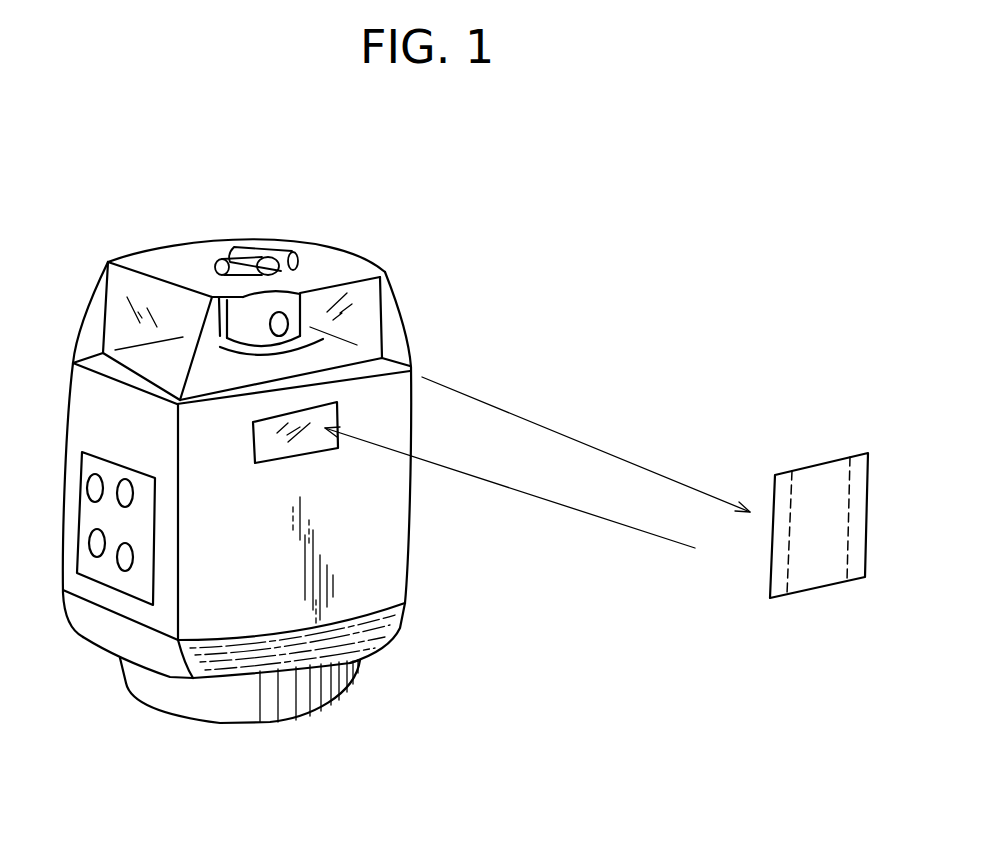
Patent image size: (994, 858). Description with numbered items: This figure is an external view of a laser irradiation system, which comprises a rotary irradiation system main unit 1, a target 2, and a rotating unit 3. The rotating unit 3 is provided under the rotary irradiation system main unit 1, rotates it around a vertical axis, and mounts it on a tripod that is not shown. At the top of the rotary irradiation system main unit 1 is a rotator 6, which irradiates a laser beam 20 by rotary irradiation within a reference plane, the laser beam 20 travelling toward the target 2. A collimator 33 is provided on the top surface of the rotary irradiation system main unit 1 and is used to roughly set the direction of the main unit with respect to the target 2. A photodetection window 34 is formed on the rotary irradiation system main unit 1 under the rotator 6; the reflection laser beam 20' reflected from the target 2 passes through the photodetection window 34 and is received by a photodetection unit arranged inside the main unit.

The rotary irradiation system main unit 1 is at (430, 360).
The target 2 is at (817, 590).
The rotating unit 3 is at (388, 682).
The rotator 6 is at (310, 312).
The laser beam 20 is at (586, 413).
The reflection laser beam 20' is at (510, 542).
The collimator 33 is at (290, 247).
The photodetection window 34 is at (280, 463).